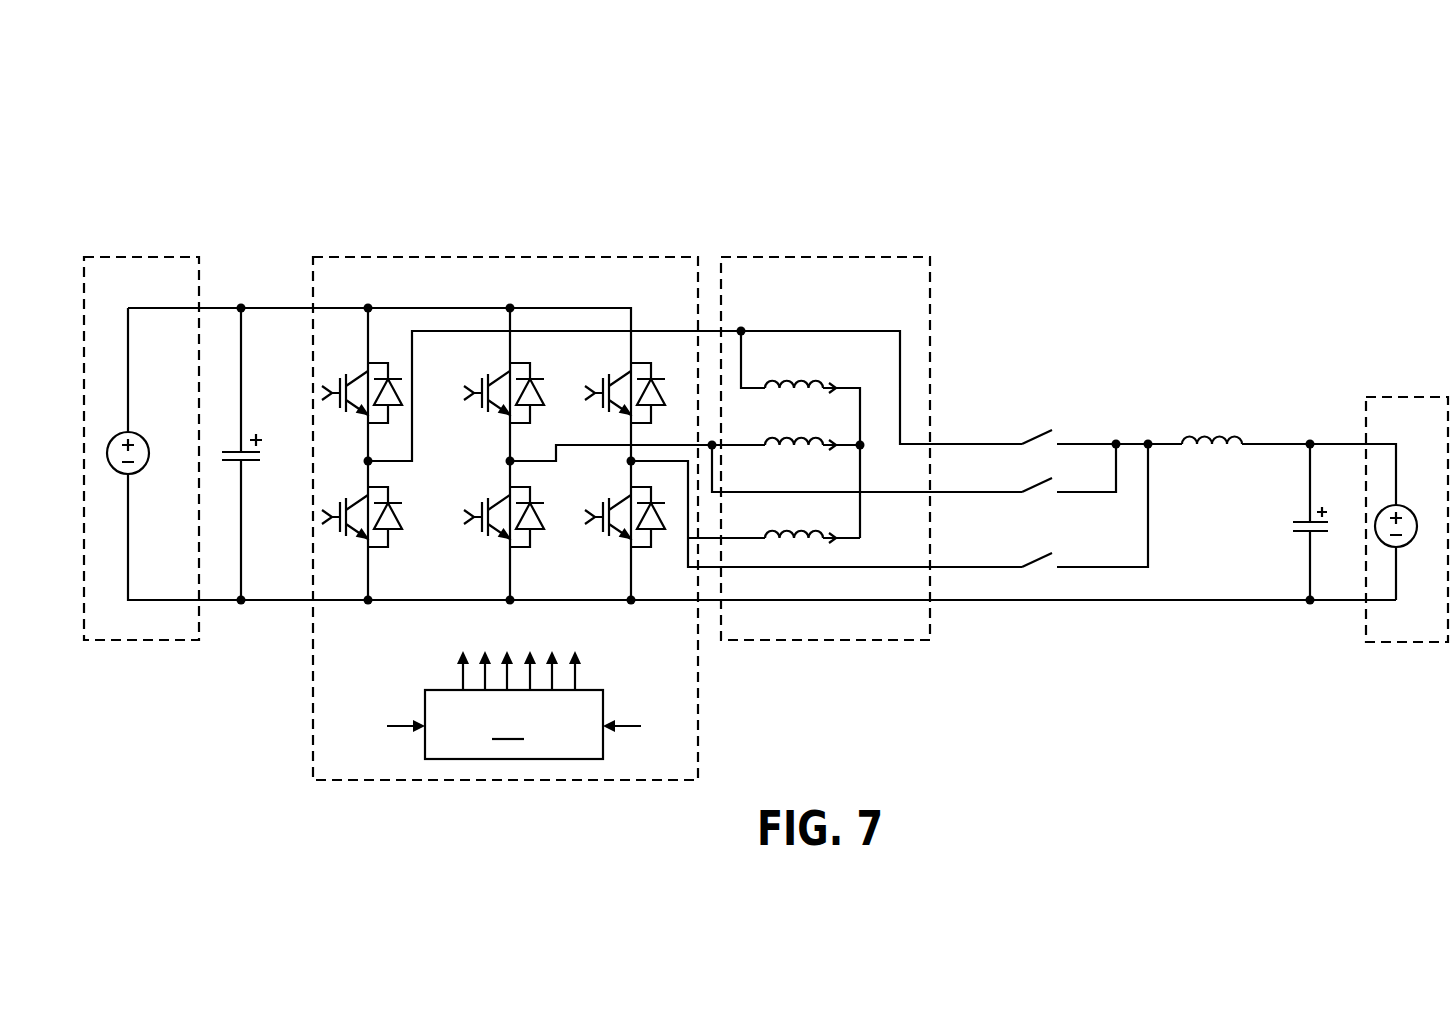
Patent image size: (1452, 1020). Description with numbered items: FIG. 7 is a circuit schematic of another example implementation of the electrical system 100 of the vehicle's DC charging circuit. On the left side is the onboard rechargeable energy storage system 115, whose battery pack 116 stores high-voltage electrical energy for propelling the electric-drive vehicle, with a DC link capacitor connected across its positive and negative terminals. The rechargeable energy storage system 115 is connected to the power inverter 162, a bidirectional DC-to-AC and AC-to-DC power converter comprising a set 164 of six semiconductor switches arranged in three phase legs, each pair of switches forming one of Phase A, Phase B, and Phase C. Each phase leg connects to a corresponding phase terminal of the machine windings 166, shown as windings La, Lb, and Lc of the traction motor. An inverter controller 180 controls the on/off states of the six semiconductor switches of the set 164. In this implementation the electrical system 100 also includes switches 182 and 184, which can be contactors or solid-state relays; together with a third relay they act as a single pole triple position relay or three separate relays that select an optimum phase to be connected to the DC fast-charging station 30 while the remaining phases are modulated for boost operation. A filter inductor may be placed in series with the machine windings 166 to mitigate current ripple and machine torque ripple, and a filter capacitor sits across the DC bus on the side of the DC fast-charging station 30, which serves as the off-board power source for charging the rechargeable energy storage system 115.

The electrical system 100 is at (963, 130).
The rechargeable energy storage system 115 is at (170, 257).
The battery pack 116 is at (147, 437).
The power inverter 162 is at (568, 235).
The set of semiconductor switches 164 is at (428, 257).
The machine windings 166 is at (838, 245).
The inverter controller 180 is at (1033, 432).
The switch 182 is at (1033, 480).
The switch 184 is at (1033, 555).
The DC fast-charging station 30 is at (1366, 385).